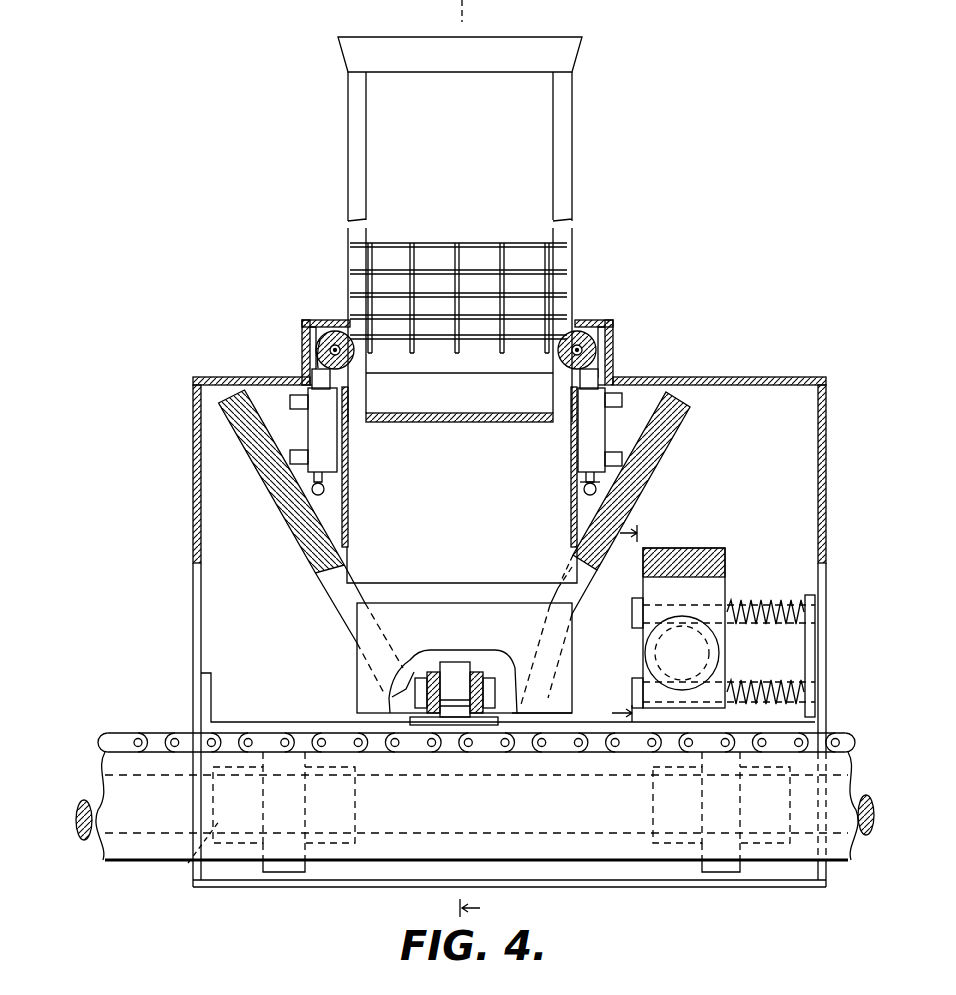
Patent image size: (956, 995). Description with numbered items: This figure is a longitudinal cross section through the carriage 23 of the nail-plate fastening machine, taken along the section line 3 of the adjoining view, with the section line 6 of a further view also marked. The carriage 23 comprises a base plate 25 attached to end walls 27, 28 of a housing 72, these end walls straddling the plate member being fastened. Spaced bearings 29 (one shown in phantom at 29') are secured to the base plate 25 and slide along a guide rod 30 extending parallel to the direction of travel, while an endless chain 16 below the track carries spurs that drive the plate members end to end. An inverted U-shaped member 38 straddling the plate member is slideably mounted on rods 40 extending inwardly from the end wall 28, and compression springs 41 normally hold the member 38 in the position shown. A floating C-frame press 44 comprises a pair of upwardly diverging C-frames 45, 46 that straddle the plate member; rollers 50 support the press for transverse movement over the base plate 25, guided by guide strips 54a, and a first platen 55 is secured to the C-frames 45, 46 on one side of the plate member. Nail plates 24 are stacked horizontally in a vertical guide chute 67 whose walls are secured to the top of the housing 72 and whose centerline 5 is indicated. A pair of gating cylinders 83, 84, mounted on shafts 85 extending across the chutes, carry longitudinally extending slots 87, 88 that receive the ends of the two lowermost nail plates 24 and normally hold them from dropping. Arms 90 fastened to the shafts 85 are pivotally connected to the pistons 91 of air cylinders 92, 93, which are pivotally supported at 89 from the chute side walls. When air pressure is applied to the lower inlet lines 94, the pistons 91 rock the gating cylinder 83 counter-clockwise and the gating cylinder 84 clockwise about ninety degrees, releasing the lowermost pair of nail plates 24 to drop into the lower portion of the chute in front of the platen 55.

The centerline 5 is at (476, 11).
The vertical guide chute 67 is at (531, 33).
The nail plates 24 is at (563, 266).
The gating cylinder 83 is at (614, 322).
The shafts 85 is at (614, 334).
The arms 90 is at (614, 349).
The pistons 91 is at (616, 373).
The longitudinally extending slot 88 is at (343, 334).
The gating cylinder 84 is at (320, 345).
The longitudinally extending slot 87 is at (577, 327).
The carriage 23 is at (228, 373).
The housing 72 is at (703, 380).
The end wall 27 is at (192, 540).
The end wall 28 is at (828, 550).
The air cylinder 93 is at (308, 424).
The air cylinder 92 is at (606, 420).
The lower inlet lines 94 is at (574, 466).
The pivot support 89 is at (575, 492).
The C-frame 45 is at (275, 505).
The floating C-frame press 44 is at (294, 557).
The C-frame 46 is at (656, 462).
The inverted U-shaped member 38 is at (716, 548).
The rods 40 is at (728, 598).
The compression springs 41 is at (760, 600).
The first platen 55 is at (572, 652).
The rollers 50 is at (455, 662).
The base plate 25 is at (576, 714).
The guide strips 54a is at (484, 726).
The endless chain 16 is at (257, 731).
The guide rod 30 is at (97, 838).
The bearings 29 is at (501, 812).
The rail 29' is at (187, 854).
The section line 6 is at (624, 624).
The section line 3 is at (479, 908).